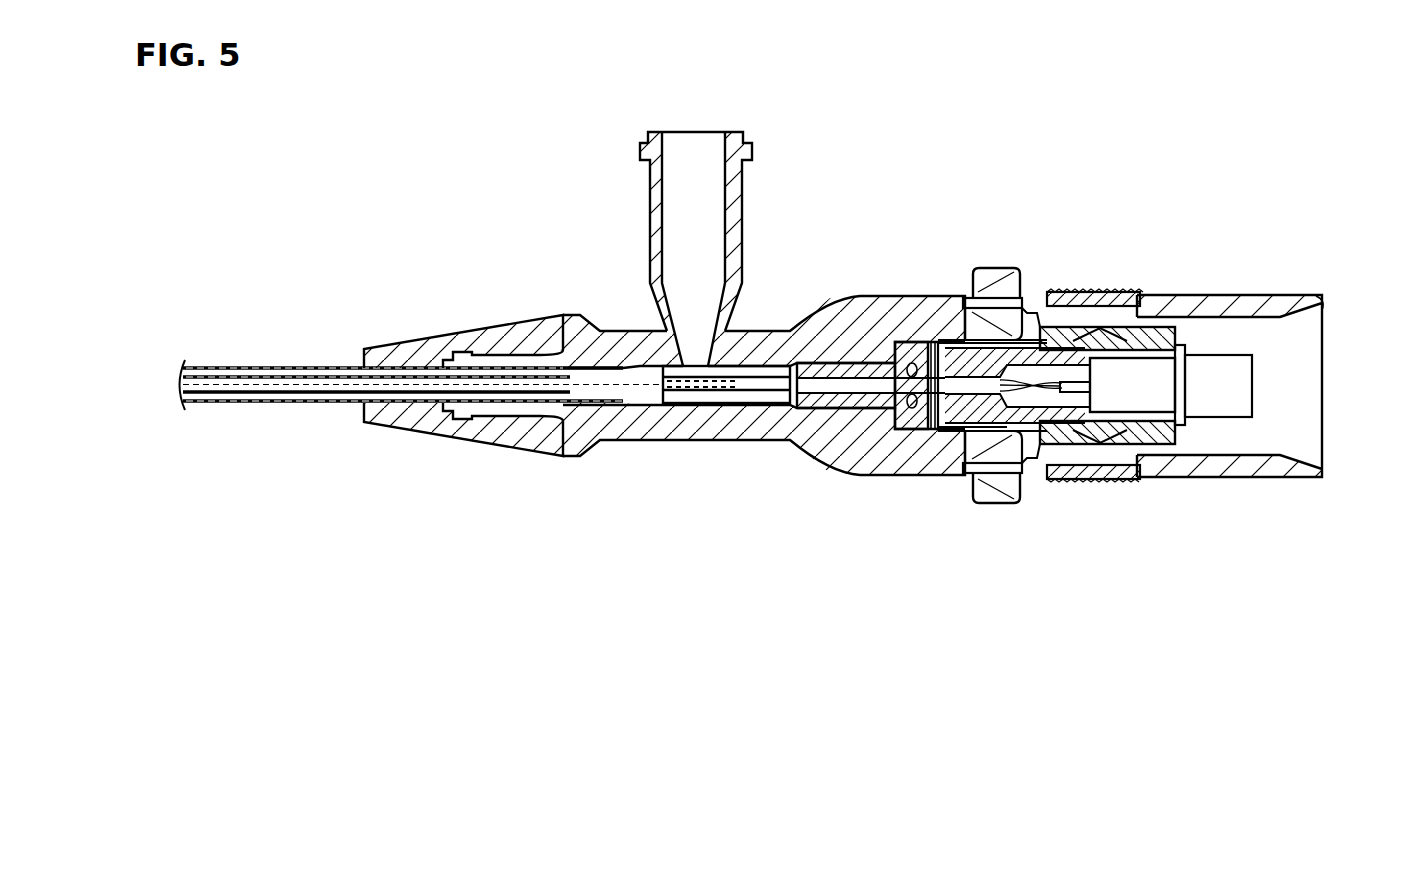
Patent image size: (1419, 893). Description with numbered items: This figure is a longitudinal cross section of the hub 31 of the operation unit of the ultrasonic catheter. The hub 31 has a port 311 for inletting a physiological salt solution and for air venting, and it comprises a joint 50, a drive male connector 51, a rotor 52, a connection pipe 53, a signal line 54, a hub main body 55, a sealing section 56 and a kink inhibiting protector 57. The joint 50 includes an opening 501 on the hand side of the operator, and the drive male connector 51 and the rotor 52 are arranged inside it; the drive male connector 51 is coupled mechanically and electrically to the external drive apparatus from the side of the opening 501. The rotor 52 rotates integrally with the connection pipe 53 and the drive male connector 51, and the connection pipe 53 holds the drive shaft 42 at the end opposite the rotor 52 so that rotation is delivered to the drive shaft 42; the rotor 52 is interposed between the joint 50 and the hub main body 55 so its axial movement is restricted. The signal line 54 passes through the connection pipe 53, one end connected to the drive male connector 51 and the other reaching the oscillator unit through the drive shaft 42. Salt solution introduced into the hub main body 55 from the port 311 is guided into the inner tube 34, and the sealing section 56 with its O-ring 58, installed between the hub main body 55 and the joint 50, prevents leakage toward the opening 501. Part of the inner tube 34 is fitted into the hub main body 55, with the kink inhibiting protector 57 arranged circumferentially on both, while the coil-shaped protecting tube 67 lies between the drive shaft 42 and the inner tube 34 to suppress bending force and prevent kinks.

The hub 31 is at (813, 304).
The port 311 is at (652, 185).
The inner tube 34 is at (214, 405).
The drive shaft 42 is at (648, 392).
The joint 50 is at (1233, 296).
The opening 501 is at (1328, 302).
The drive male connector 51 is at (1214, 410).
The rotor 52 is at (1156, 440).
The connection pipe 53 is at (813, 397).
The signal line 54 is at (1020, 386).
The hub main body 55 is at (616, 332).
The sealing section 56 is at (909, 428).
The kink inhibiting protector 57 is at (502, 446).
The O-ring 58 is at (912, 364).
The protecting tube 67 is at (279, 400).